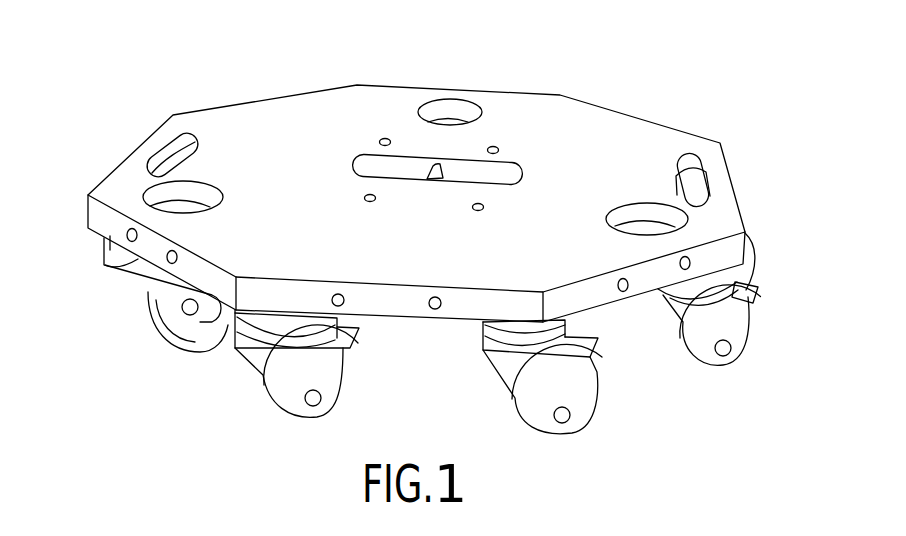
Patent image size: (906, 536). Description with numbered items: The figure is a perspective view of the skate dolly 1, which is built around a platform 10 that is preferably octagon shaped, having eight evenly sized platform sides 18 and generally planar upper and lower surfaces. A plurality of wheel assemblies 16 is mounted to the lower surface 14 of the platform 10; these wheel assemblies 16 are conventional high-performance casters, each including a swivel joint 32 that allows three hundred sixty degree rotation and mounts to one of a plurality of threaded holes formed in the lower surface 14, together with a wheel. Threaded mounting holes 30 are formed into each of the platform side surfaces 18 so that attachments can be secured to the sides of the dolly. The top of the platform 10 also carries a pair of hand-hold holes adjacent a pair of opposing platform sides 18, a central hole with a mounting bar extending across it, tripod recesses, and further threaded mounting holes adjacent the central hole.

The skate dolly 1 is at (296, 36).
The platform 10 is at (655, 109).
The lower surface 14 is at (620, 300).
The wheel assemblies 16 is at (246, 377).
The platform sides 18 is at (200, 108).
The threaded mounting holes 30 is at (166, 259).
The swivel joint 32 is at (236, 320).